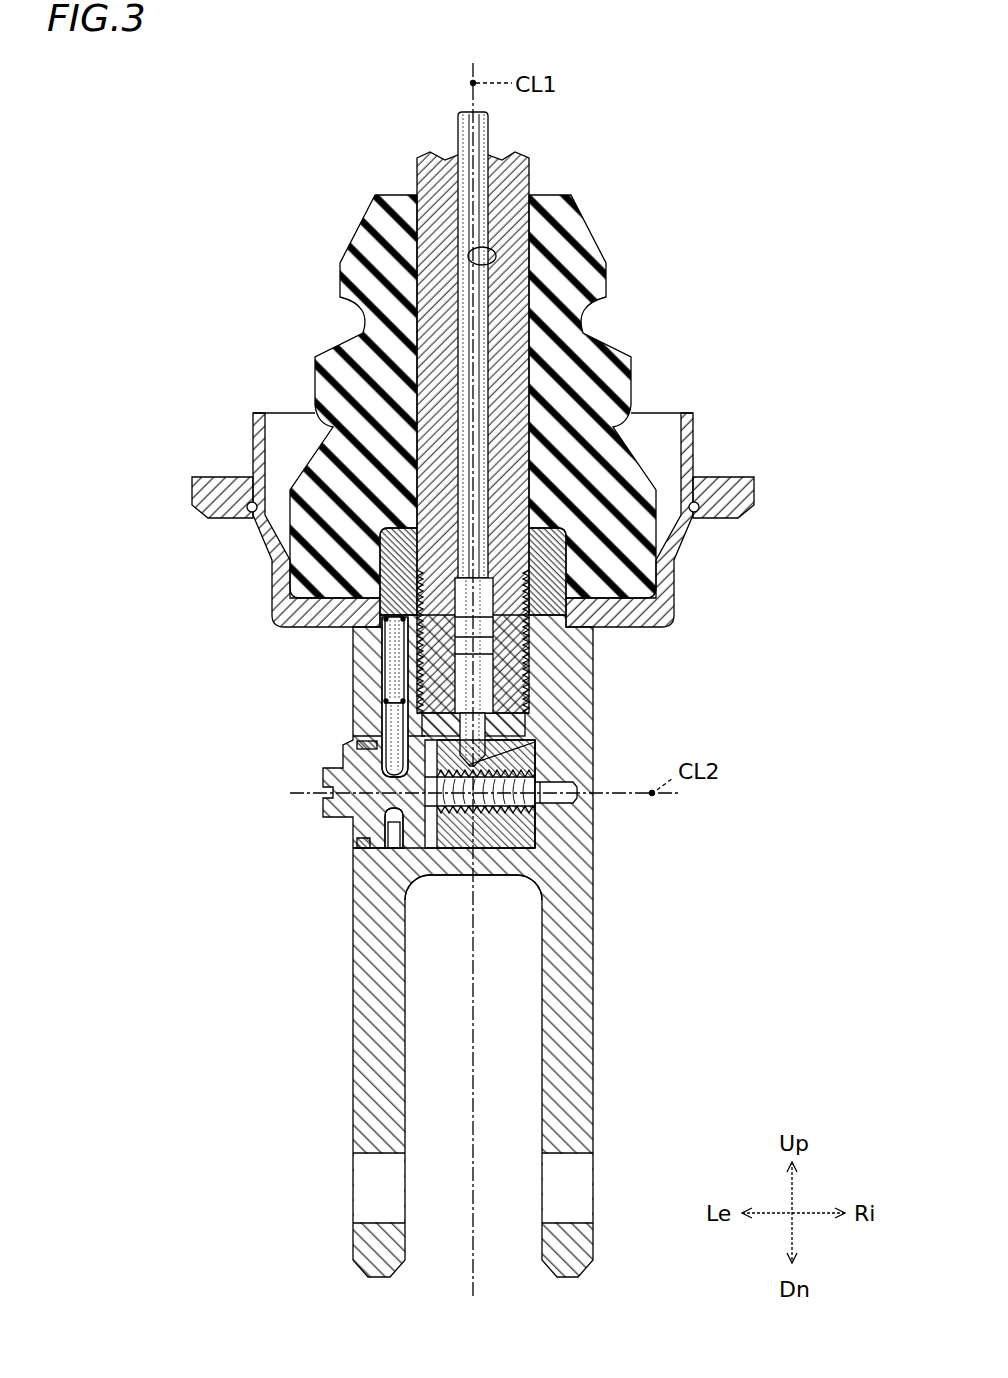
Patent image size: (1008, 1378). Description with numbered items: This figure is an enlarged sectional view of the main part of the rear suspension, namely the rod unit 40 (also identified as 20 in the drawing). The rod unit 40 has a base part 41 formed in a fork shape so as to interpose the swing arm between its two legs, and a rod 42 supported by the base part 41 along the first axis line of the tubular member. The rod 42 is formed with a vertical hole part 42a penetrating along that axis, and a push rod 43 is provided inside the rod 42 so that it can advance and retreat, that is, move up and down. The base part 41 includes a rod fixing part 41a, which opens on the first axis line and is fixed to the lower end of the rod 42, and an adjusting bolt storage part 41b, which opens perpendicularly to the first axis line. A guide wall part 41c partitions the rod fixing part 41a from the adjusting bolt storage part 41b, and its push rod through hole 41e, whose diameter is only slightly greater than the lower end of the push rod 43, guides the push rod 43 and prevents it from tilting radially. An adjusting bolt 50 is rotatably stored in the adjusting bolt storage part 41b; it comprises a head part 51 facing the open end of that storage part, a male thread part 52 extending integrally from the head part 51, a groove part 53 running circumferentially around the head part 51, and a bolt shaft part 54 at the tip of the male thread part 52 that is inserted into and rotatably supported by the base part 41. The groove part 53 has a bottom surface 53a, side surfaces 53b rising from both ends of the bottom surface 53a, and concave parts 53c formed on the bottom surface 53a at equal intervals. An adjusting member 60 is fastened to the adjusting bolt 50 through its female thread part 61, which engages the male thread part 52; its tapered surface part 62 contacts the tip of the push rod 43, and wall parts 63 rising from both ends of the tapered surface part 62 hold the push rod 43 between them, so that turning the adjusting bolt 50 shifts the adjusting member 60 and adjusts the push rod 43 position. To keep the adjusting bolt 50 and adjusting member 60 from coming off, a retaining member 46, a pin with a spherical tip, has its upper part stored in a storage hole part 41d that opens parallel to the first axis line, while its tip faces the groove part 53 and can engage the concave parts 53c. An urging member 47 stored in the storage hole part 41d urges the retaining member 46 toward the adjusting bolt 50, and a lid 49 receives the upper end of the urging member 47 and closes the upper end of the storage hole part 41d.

The rod unit 40 is at (238, 214).
The sensor assembly 20 is at (473, 694).
The base part 41 is at (593, 1058).
The rod fixing part 41a is at (527, 650).
The adjusting bolt storage part 41b is at (367, 751).
The guide wall part 41c is at (414, 745).
The storage hole part 41d is at (387, 672).
The push rod through hole 41e is at (476, 758).
The rod 42 is at (514, 178).
The vertical hole part 42a is at (496, 256).
The push rod 43 is at (486, 140).
The retaining member 46 is at (390, 728).
The urging member 47 is at (383, 651).
The lid 49 is at (400, 566).
The adjusting bolt 50 is at (320, 808).
The head part 51 is at (358, 840).
The male thread part 52 is at (534, 838).
The groove part 53 is at (396, 880).
The bottom surface 53a is at (375, 837).
The side surface 53b is at (398, 852).
The concave part 53c is at (412, 893).
The bolt shaft part 54 is at (577, 817).
The adjusting member 60 is at (540, 748).
The female thread part 61 is at (455, 800).
The tapered surface part 62 is at (493, 767).
The wall part 63 is at (527, 716).